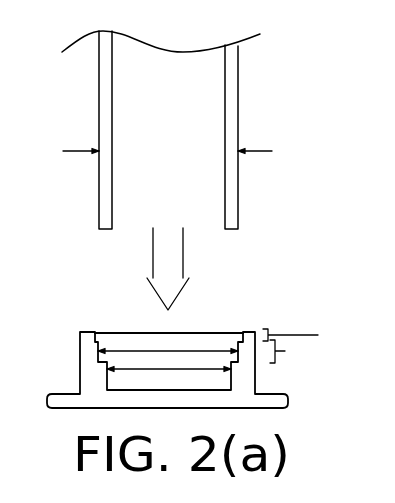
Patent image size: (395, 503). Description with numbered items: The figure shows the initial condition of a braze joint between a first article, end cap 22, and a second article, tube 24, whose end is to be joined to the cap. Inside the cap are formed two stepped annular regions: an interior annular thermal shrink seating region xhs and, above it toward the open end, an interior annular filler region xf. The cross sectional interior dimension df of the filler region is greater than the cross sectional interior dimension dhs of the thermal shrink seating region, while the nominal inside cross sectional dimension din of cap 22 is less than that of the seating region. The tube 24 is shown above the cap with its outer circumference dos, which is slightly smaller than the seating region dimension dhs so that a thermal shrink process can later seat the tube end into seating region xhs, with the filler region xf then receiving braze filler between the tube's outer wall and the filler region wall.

The end cap 22 is at (88, 378).
The tube 24 is at (234, 123).
The outer circumference of the second article dos is at (184, 155).
The cross sectional interior dimension of the thermal shrink seating region dhs is at (130, 351).
The cross sectional interior dimension of the filler region df is at (208, 333).
The nominal inside cross sectional dimension of the cap din is at (169, 374).
The interior annular filler region xf is at (301, 341).
The interior annular thermal shrink seating region xhs is at (293, 356).